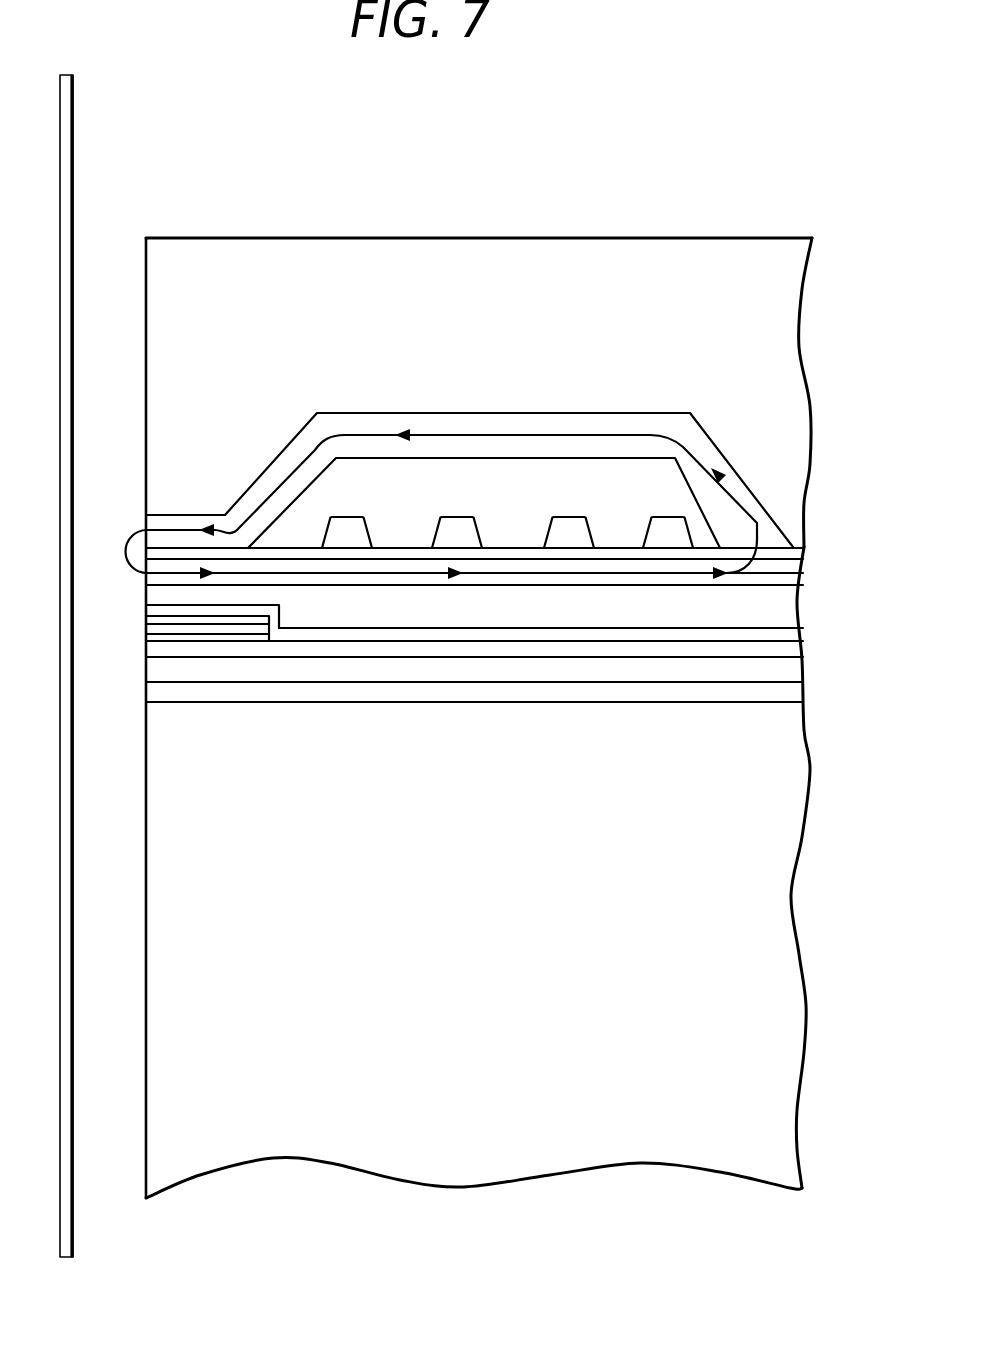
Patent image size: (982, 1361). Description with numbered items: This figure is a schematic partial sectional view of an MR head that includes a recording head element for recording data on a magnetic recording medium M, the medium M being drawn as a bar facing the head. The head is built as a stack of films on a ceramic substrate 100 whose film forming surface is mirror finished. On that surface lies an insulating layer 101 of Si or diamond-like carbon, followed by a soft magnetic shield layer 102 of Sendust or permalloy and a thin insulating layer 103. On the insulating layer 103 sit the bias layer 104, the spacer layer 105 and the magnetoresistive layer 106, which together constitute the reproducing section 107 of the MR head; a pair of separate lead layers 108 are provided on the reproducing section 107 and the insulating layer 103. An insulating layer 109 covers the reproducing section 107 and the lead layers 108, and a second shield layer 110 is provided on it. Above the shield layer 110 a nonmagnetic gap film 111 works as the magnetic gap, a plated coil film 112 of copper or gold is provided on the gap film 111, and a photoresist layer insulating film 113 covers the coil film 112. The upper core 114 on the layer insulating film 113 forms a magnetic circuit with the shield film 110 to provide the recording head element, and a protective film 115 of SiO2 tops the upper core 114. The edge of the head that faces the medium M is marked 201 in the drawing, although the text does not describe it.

The magnetic recording medium M is at (67, 132).
The substrate 100 is at (793, 770).
The insulating layer 101 is at (793, 690).
The shield layer 102 is at (793, 667).
The insulating layer 103 is at (792, 649).
The bias layer 104 is at (146, 641).
The spacer layer 105 is at (146, 632).
The magnetoresistive layer 106 is at (146, 612).
The reproducing section 107 is at (128, 652).
The lead layer 108 is at (788, 634).
The insulating layer 109 is at (787, 608).
The shield layer 110 is at (792, 573).
The gap film 111 is at (800, 552).
The coil film 112 is at (667, 527).
The layer insulating film 113 is at (608, 478).
The upper core 114 is at (540, 420).
The protective film 115 is at (400, 262).
The air bearing surface of head slider 201 is at (146, 992).